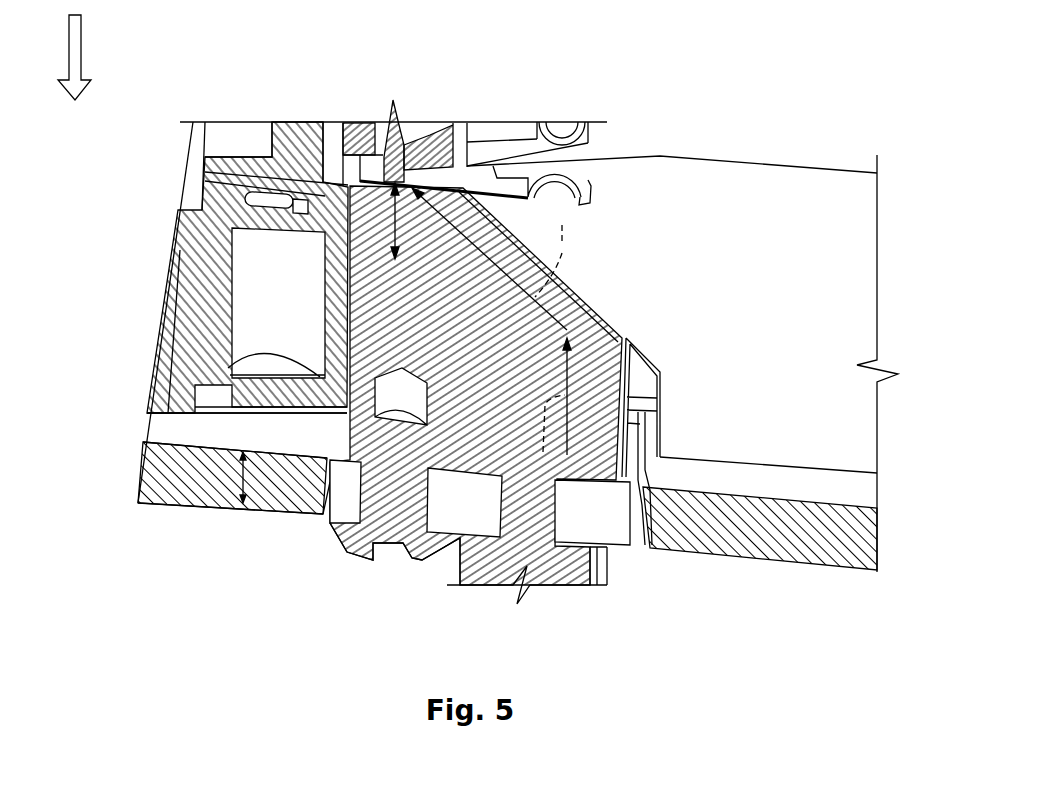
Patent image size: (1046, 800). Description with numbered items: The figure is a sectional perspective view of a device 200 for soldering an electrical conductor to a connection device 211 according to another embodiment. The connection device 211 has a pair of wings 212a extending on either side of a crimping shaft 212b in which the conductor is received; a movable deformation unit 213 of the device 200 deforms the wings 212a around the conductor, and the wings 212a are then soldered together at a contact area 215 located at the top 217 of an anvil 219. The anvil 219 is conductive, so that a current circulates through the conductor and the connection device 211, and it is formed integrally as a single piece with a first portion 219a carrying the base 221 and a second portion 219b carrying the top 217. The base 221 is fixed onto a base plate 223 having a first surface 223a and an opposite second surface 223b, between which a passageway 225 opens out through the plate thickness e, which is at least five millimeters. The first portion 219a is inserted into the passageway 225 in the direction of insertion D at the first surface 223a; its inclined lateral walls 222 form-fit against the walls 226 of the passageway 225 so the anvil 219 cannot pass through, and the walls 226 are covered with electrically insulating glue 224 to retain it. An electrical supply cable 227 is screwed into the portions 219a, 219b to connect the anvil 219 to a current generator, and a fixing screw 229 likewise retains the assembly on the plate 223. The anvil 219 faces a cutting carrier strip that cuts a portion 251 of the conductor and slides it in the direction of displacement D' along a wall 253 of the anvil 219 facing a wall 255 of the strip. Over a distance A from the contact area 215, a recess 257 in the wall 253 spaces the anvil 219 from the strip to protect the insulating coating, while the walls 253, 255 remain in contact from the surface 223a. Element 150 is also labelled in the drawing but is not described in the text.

The device for soldering 200 is at (824, 64).
The support structure 150 is at (197, 277).
The connection device 211 is at (583, 130).
The wings 212a is at (467, 165).
The crimping shaft 212b is at (453, 140).
The movable deformation unit 213 is at (402, 130).
The contact area 215 is at (383, 140).
The top of the anvil 217 is at (218, 157).
The anvil 219 is at (597, 338).
The first portion of the anvil 219a is at (650, 517).
The second portion of the anvil 219b is at (655, 350).
The base of the anvil 221 is at (609, 547).
The lateral walls 222 is at (660, 465).
The base plate 223 is at (157, 477).
The first surface 223a is at (160, 442).
The second surface 223b is at (160, 507).
The electrically insulating glue 224 is at (327, 512).
The passageway 225 is at (330, 512).
The walls of the passageway 226 is at (322, 492).
The electrical supply cable 227 is at (565, 568).
The fixing screw 229 is at (365, 540).
The cut portion of electrical conductor 251 is at (302, 192).
The wall of the anvil 253 is at (322, 350).
The wall of the cutting carrier strip 255 is at (220, 200).
The recess 257 is at (352, 186).
The distance A is at (390, 195).
The thickness e is at (235, 495).
The direction of insertion D is at (94, 54).
The direction of displacement D' is at (107, 81).